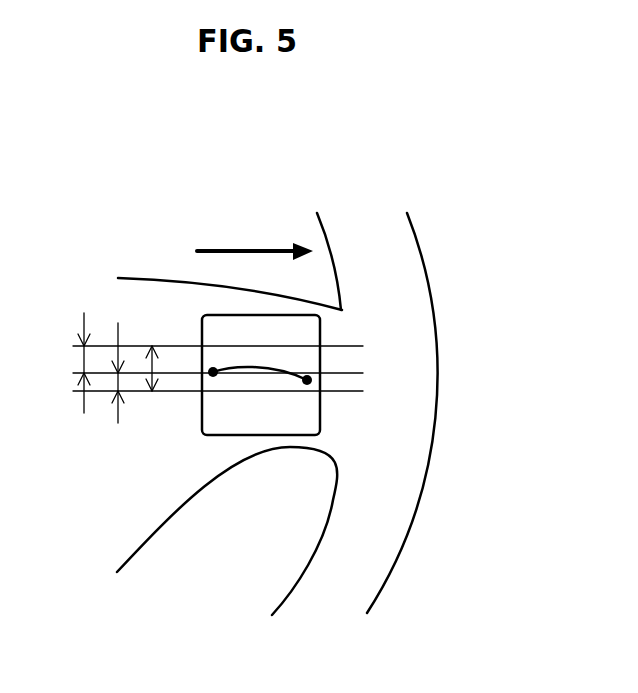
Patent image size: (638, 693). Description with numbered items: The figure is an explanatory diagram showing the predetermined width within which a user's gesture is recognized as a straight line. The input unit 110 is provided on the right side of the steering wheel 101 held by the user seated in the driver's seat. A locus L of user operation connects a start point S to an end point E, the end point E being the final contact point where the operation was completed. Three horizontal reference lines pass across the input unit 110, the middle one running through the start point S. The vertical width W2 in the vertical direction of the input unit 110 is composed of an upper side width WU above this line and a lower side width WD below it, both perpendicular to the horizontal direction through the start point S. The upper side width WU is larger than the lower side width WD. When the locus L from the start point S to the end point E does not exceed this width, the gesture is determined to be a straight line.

The steering wheel 101 is at (143, 300).
The input unit 110 is at (308, 342).
The locus L is at (265, 365).
The start point S is at (213, 372).
The end point E is at (307, 380).
The upper side width WU is at (83, 358).
The lower side width WD is at (118, 383).
The vertical width W2 is at (152, 367).